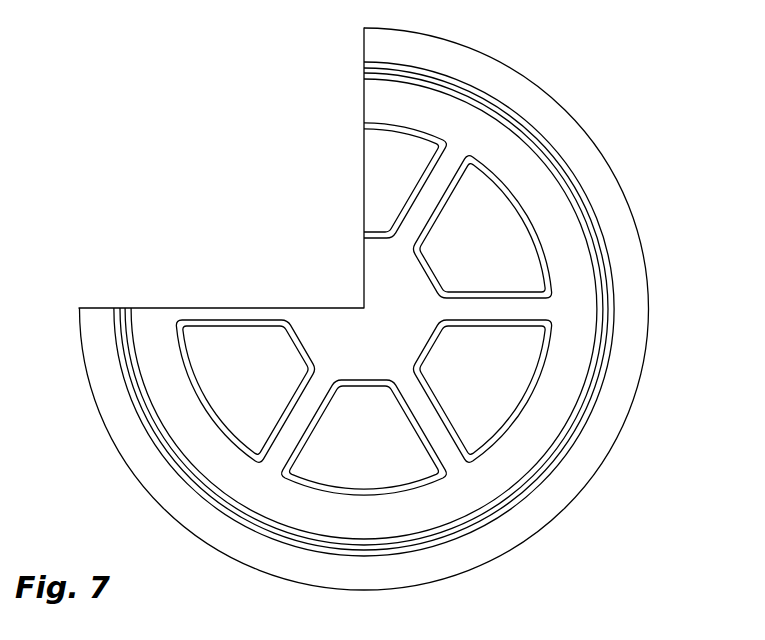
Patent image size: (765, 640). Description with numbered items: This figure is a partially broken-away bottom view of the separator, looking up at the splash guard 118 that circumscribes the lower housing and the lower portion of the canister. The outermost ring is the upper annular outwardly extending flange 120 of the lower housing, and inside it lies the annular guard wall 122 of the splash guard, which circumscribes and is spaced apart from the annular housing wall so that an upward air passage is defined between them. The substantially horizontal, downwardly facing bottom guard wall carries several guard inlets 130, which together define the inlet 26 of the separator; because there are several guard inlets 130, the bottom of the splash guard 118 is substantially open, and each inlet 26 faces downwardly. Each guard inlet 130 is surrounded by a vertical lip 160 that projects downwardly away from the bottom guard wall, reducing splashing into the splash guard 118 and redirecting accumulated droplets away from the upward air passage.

The upper annular outwardly extending flange 120 is at (512, 80).
The annular guard wall 122 is at (562, 165).
The inlet 26 is at (515, 250).
The guard inlet 130 is at (532, 280).
The vertical lip 160 is at (508, 295).
The splash guard 118 is at (497, 518).